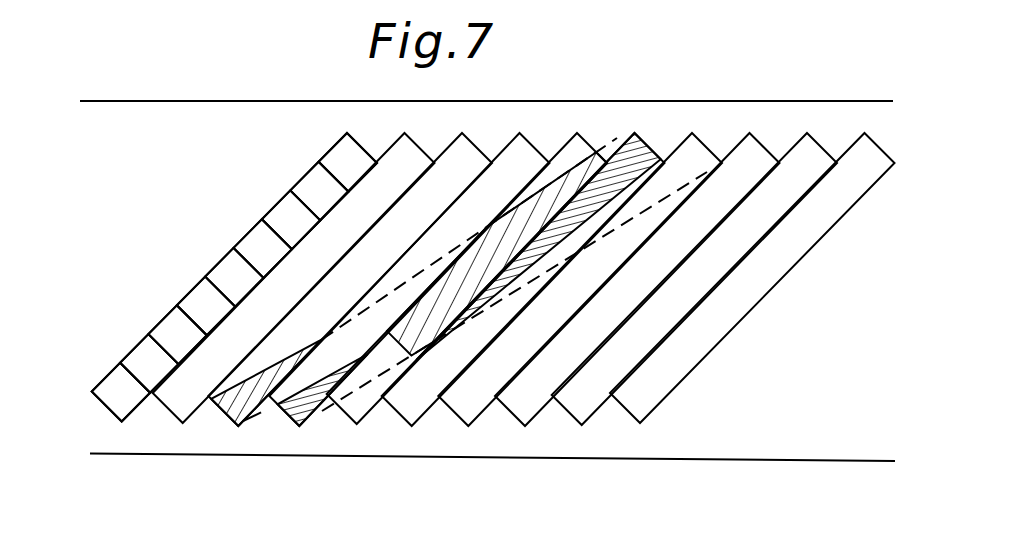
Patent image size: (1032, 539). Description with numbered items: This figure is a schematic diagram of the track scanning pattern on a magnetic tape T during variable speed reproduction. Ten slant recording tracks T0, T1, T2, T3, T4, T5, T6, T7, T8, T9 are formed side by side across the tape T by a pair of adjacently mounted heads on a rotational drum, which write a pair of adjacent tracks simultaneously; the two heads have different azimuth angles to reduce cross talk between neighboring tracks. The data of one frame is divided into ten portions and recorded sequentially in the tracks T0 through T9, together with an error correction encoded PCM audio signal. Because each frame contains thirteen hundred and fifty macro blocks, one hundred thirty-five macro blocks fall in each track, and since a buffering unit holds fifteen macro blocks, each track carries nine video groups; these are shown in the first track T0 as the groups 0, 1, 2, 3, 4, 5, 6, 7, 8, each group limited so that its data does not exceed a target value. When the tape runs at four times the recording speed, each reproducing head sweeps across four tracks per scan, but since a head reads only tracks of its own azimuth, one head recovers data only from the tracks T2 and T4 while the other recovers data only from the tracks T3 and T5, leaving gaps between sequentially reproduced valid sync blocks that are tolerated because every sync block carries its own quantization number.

The magnetic tape T is at (613, 120).
The slant recording track T0 is at (109, 412).
The slant recording track T1 is at (170, 413).
The slant recording track T2 is at (225, 416).
The slant recording track T3 is at (286, 416).
The slant recording track T4 is at (344, 414).
The slant recording track T5 is at (399, 416).
The slant recording track T6 is at (455, 416).
The slant recording track T7 is at (512, 416).
The slant recording track T8 is at (569, 415).
The slant recording track T9 is at (627, 413).
The video group 0 is at (121, 392).
The video group 1 is at (149, 363).
The video group 2 is at (177, 334).
The video group 3 is at (206, 306).
The video group 4 is at (234, 277).
The video group 5 is at (263, 248).
The video group 6 is at (291, 219).
The video group 7 is at (319, 191).
The video group 8 is at (348, 162).